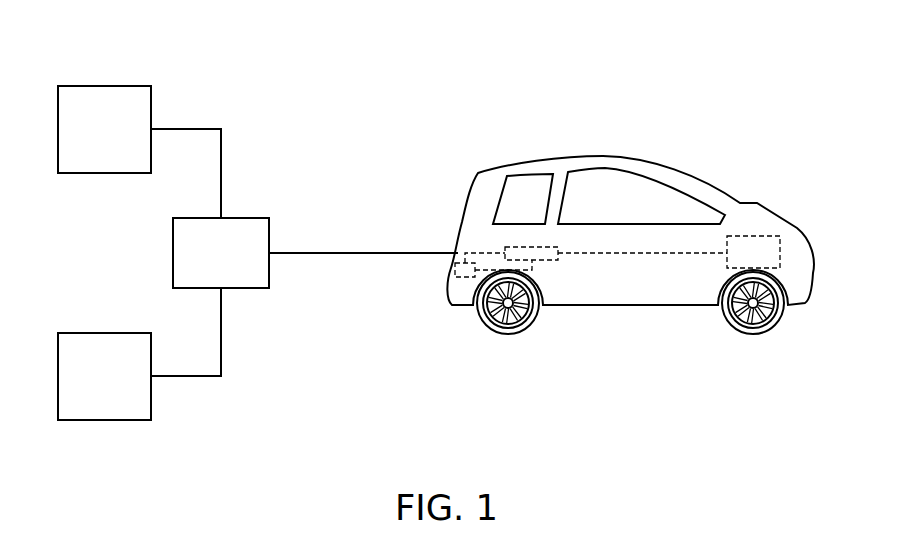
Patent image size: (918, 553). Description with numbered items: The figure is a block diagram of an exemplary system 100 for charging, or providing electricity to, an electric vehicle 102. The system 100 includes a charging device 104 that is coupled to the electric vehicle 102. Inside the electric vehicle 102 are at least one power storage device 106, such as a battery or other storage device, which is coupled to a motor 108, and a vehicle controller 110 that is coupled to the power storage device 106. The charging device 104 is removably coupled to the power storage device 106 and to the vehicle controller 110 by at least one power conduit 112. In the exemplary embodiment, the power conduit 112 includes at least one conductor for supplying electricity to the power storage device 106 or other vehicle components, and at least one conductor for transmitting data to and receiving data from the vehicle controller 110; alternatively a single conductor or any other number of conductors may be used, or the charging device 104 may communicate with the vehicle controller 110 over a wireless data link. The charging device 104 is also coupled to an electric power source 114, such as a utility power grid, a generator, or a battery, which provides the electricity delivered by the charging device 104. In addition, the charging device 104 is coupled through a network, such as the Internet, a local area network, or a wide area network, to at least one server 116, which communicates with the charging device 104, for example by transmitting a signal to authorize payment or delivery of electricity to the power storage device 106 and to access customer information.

The system 100 is at (465, 68).
The electric vehicle 102 is at (622, 136).
The charging device 104 is at (245, 218).
The power storage device 106 is at (547, 260).
The motor 108 is at (755, 236).
The vehicle controller 110 is at (462, 277).
The power conduit 112 is at (362, 253).
The electric power source 114 is at (103, 333).
The server 116 is at (103, 86).